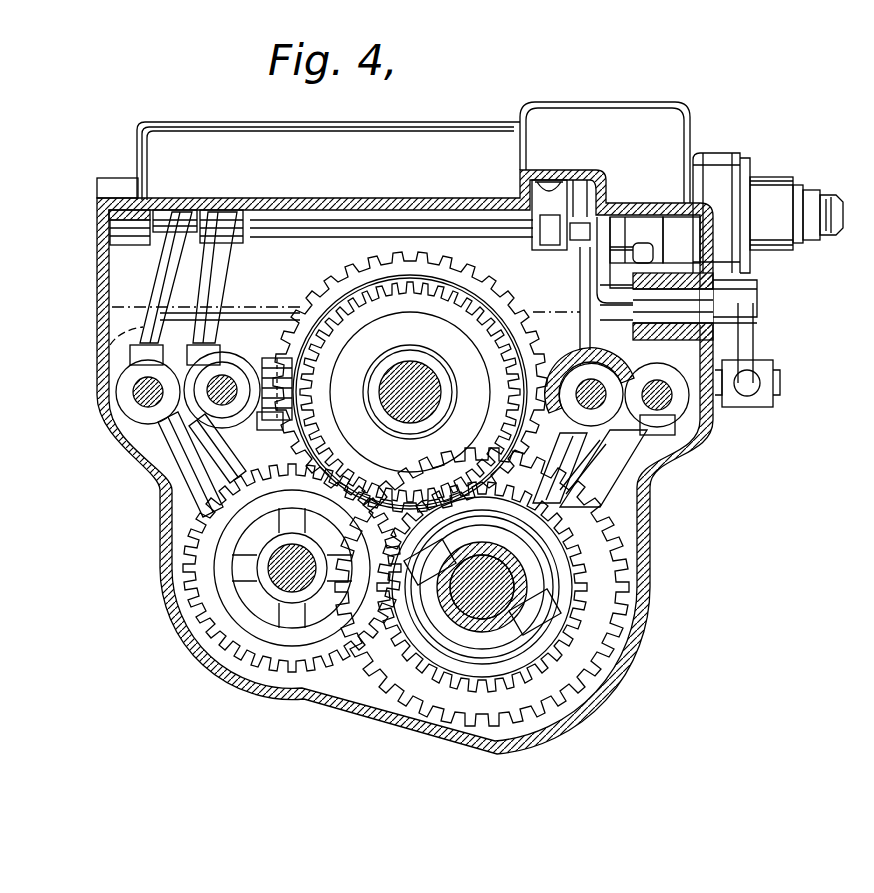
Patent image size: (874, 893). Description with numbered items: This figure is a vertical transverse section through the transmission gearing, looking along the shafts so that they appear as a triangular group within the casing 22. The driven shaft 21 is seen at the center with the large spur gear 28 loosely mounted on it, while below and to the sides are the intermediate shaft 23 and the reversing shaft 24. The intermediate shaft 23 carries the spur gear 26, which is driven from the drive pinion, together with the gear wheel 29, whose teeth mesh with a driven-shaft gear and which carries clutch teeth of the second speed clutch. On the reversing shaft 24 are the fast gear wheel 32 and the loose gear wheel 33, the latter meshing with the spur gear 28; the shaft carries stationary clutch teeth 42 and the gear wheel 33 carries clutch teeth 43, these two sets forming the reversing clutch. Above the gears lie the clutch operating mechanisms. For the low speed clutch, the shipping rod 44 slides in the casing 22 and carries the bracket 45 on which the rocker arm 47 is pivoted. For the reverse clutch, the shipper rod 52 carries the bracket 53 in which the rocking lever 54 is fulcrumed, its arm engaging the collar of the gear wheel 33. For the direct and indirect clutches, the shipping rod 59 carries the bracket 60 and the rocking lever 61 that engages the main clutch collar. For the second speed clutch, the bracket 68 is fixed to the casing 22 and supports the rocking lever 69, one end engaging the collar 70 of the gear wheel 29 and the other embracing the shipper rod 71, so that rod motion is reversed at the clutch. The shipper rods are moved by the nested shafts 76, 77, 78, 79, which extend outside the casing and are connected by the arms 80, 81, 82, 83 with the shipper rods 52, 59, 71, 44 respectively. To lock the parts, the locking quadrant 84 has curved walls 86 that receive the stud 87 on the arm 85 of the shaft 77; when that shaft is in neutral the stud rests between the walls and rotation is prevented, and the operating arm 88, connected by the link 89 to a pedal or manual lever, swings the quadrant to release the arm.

The driven shaft 21 is at (410, 375).
The casing 22 is at (97, 272).
The intermediate shaft 23 is at (476, 613).
The reversing shaft 24 is at (282, 585).
The spur gear 26 is at (617, 595).
The spur gear 28 is at (345, 263).
The gear wheel 29 is at (587, 560).
The gear wheel 32 is at (190, 608).
The gear wheel 33 is at (215, 572).
The clutch teeth 42 is at (293, 617).
The clutch teeth 43 is at (258, 605).
The shipping rod 44 is at (668, 405).
The bracket 45 is at (640, 440).
The rocker arm 47 is at (655, 425).
The shipper rod 52 is at (133, 390).
The bracket 53 is at (200, 462).
The rocking lever 54 is at (178, 432).
The shipping rod 59 is at (228, 382).
The bracket 60 is at (295, 398).
The rocking lever 61 is at (265, 420).
The bracket 68 is at (580, 457).
The rocking lever 69 is at (552, 467).
The collar 70 is at (455, 613).
The shipper rod 71 is at (580, 378).
The nested shaft 76 is at (833, 202).
The nested shaft 77 is at (813, 197).
The nested shaft 78 is at (797, 188).
The nested shaft 79 is at (757, 183).
The arm 80 is at (162, 272).
The arm 81 is at (225, 265).
The arm 82 is at (581, 262).
The arm 83 is at (673, 337).
The locking quadrant 84 is at (598, 285).
The arm 85 is at (535, 222).
The curved walls 86 is at (548, 253).
The stud 87 is at (608, 205).
The operating arm 88 is at (755, 360).
The link 89 is at (773, 385).